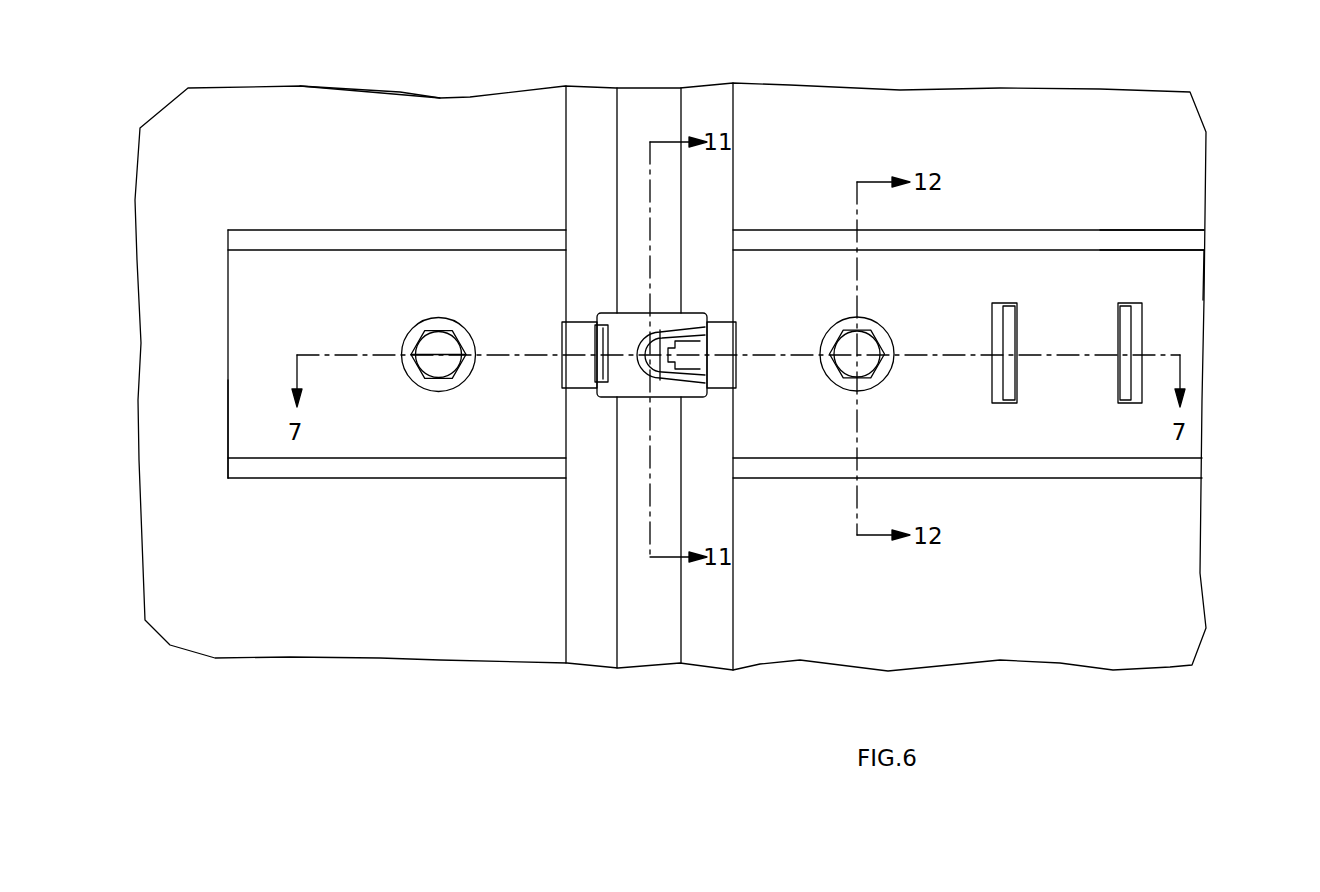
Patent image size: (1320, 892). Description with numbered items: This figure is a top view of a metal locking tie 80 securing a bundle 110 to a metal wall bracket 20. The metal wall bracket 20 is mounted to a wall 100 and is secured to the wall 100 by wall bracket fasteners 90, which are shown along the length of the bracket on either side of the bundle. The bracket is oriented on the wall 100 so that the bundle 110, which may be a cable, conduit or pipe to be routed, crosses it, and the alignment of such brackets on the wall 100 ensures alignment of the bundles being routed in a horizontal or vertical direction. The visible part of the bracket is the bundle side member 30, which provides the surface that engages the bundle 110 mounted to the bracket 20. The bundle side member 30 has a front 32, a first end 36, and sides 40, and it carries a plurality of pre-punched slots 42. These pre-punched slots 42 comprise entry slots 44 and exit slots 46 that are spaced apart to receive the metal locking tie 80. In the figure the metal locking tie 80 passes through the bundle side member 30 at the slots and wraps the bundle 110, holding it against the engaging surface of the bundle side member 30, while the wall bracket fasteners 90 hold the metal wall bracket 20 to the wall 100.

The metal wall bracket 20 is at (278, 508).
The bundle side member 30 is at (252, 307).
The front 32 is at (1200, 269).
The first end 36 is at (228, 391).
The sides 40 is at (1157, 229).
The pre-punched slots 42 is at (1066, 350).
The entry slots 44 is at (1140, 388).
The exit slots 46 is at (997, 388).
The metal locking tie 80 is at (575, 372).
The wall bracket fastener 90 is at (432, 318).
The wall 100 is at (468, 120).
The bundle 110 is at (705, 95).